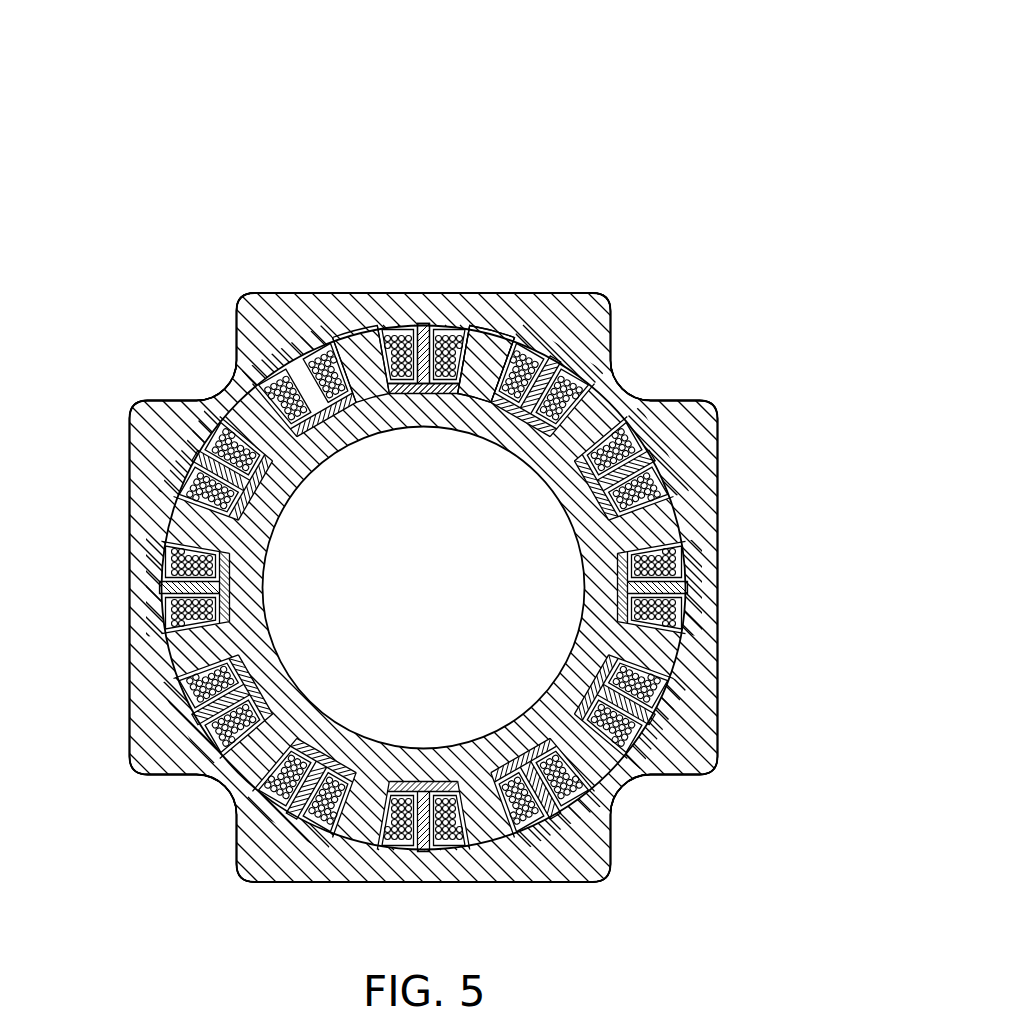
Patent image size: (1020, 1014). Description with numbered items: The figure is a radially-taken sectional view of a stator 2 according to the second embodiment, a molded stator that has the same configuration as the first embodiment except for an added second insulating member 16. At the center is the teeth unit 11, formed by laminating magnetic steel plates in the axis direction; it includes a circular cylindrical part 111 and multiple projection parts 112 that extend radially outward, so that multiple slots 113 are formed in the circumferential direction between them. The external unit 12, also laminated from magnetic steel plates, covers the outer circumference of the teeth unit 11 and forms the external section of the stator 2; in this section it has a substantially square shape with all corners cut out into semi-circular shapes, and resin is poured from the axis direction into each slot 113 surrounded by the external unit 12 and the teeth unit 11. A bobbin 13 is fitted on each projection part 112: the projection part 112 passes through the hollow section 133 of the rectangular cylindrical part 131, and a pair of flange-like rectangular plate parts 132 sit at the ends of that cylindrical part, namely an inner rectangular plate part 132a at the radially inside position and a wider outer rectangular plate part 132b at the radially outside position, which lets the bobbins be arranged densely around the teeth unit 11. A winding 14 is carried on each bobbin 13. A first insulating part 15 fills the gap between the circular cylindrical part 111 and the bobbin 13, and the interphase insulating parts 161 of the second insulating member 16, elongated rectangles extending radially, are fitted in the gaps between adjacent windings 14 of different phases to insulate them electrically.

The stator 2 is at (655, 110).
The teeth unit 11 is at (647, 203).
The circular cylindrical part 111 is at (469, 414).
The projection part 112 is at (476, 400).
The slot 113 is at (580, 368).
The external unit 12 is at (590, 312).
The bobbin 13 is at (468, 170).
The rectangular cylindrical part 131 is at (370, 350).
The rectangular plate part 132 is at (424, 385).
The inner rectangular plate part 132a is at (430, 388).
The outer rectangular plate part 132b is at (420, 326).
The hollow section 133 is at (342, 363).
The winding 14 is at (318, 343).
The first insulating part 15 is at (325, 418).
The second insulating member 16 is at (424, 573).
The interphase insulating part 161 is at (243, 323).